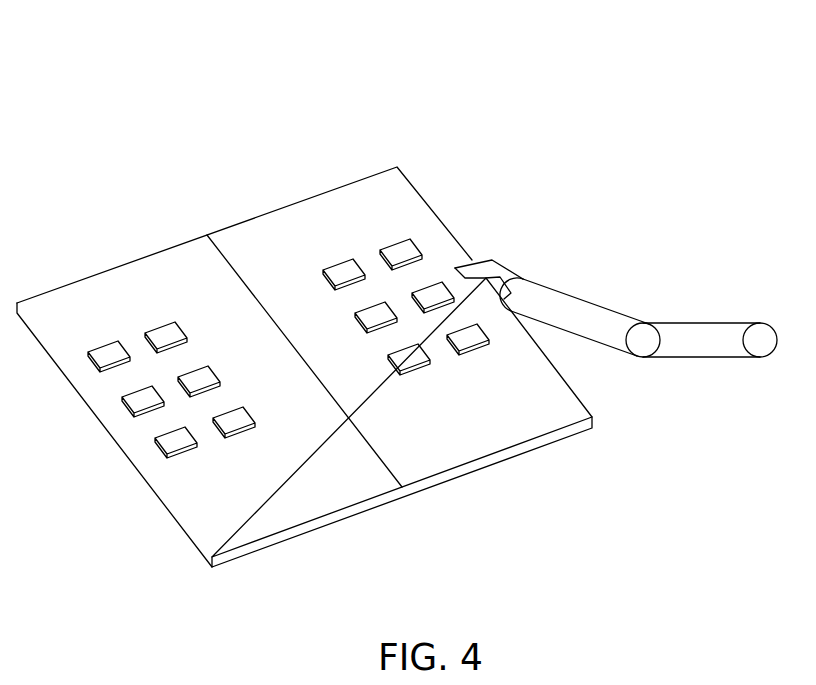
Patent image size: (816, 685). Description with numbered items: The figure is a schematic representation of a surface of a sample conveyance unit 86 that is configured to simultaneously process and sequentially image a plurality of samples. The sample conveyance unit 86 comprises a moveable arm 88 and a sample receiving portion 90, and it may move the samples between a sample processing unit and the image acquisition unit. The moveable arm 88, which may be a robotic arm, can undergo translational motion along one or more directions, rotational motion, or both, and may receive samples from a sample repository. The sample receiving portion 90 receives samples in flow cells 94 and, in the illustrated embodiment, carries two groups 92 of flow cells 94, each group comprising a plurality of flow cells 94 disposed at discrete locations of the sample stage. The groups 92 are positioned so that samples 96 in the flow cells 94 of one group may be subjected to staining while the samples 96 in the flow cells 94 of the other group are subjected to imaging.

The sample conveyance unit 86 is at (658, 74).
The moveable arm 88 is at (703, 322).
The sample receiving portion 90 is at (352, 183).
The groups of flow cells 92 is at (321, 258).
The flow cells 94 is at (463, 340).
The samples 96 is at (229, 420).